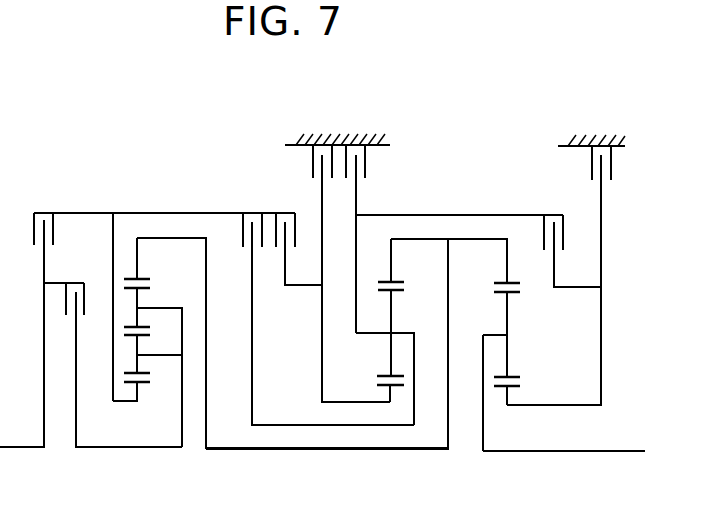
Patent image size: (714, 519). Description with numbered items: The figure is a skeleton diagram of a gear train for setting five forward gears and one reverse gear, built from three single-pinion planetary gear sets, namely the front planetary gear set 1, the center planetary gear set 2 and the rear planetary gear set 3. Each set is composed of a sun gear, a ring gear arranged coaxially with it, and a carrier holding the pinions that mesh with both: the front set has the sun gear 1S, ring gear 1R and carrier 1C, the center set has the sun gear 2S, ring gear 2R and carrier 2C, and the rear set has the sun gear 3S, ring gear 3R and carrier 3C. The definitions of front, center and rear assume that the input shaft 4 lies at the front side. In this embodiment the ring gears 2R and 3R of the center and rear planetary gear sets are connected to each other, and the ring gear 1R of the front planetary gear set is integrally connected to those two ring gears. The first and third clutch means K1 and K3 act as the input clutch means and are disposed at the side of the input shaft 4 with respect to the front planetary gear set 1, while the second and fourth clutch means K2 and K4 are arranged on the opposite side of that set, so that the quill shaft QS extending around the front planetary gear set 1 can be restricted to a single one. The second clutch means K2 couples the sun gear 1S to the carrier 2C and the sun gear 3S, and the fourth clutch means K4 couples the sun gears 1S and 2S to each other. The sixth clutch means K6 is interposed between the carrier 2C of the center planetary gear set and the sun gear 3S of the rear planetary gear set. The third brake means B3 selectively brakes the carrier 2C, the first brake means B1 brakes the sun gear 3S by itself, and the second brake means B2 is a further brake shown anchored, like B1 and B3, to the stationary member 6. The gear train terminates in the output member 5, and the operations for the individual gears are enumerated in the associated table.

The front planetary gear set 1 is at (275, 363).
The center planetary gear set 2 is at (327, 366).
The rear planetary gear set 3 is at (503, 367).
The input shaft 4 is at (13, 447).
The output shaft 5 is at (592, 451).
The transmission housing (fixed member) 6 is at (337, 145).
The ring gear of the front planetary gear set 1R is at (143, 289).
The carrier of the front planetary gear set 1C is at (158, 310).
The sun gear of the front planetary gear set 1S is at (147, 383).
The ring gear of the center planetary gear set 2R is at (395, 283).
The carrier of the center planetary gear set 2C is at (398, 337).
The sun gear of the center planetary gear set 2S is at (382, 388).
The ring gear of the rear planetary gear set 3R is at (496, 273).
The carrier of the rear planetary gear set 3C is at (488, 334).
The sun gear of the rear planetary gear set 3S is at (508, 387).
The first clutch means K1 is at (113, 353).
The second clutch means K2 is at (326, 308).
The third clutch means K3 is at (45, 236).
The fourth clutch means K4 is at (298, 238).
The sixth clutch means K6 is at (571, 240).
The first brake means B1 is at (574, 275).
The second brake means B2 is at (335, 273).
The third brake means B3 is at (454, 239).
The quill shaft QS is at (171, 213).